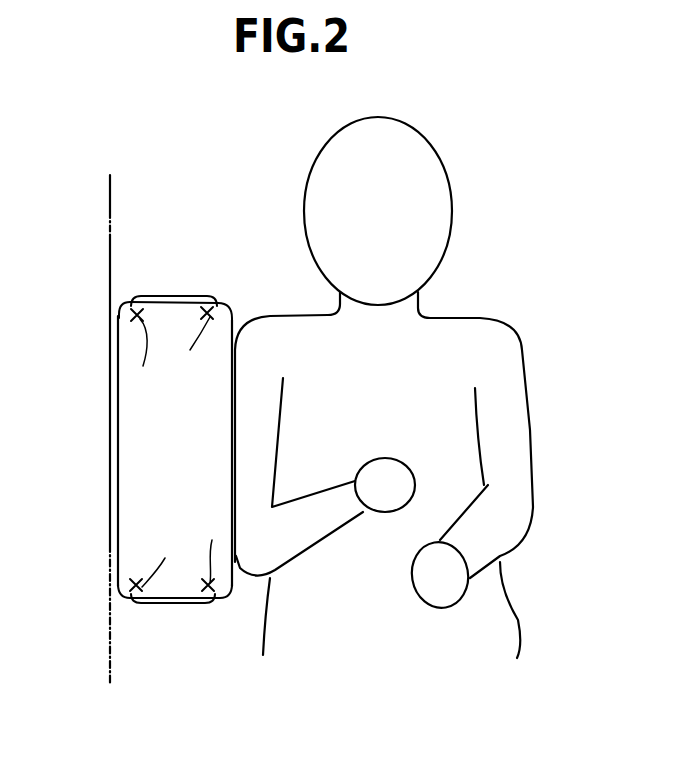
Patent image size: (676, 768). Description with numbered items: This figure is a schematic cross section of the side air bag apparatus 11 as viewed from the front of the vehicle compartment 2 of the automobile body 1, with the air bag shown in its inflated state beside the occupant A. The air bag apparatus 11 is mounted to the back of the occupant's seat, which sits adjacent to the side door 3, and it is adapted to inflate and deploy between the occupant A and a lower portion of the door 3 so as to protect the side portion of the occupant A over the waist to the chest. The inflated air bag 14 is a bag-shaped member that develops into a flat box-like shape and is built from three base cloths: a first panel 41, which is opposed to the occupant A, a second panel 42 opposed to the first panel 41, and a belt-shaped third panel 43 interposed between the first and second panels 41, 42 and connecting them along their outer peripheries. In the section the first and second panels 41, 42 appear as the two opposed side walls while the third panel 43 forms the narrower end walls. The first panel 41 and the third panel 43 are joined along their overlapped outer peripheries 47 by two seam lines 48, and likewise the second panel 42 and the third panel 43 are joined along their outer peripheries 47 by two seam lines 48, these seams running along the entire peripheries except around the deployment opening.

The body 1 is at (112, 187).
The compartment 2 is at (228, 153).
The side door 3 is at (117, 228).
The air bag apparatus 11 is at (176, 297).
The air bag 14 is at (198, 297).
The first panel 41 is at (236, 596).
The second panel 42 is at (112, 530).
The third panel 43 is at (160, 603).
The outer peripheries 47 is at (137, 319).
The seam lines 48 is at (146, 316).
The occupant A is at (443, 168).